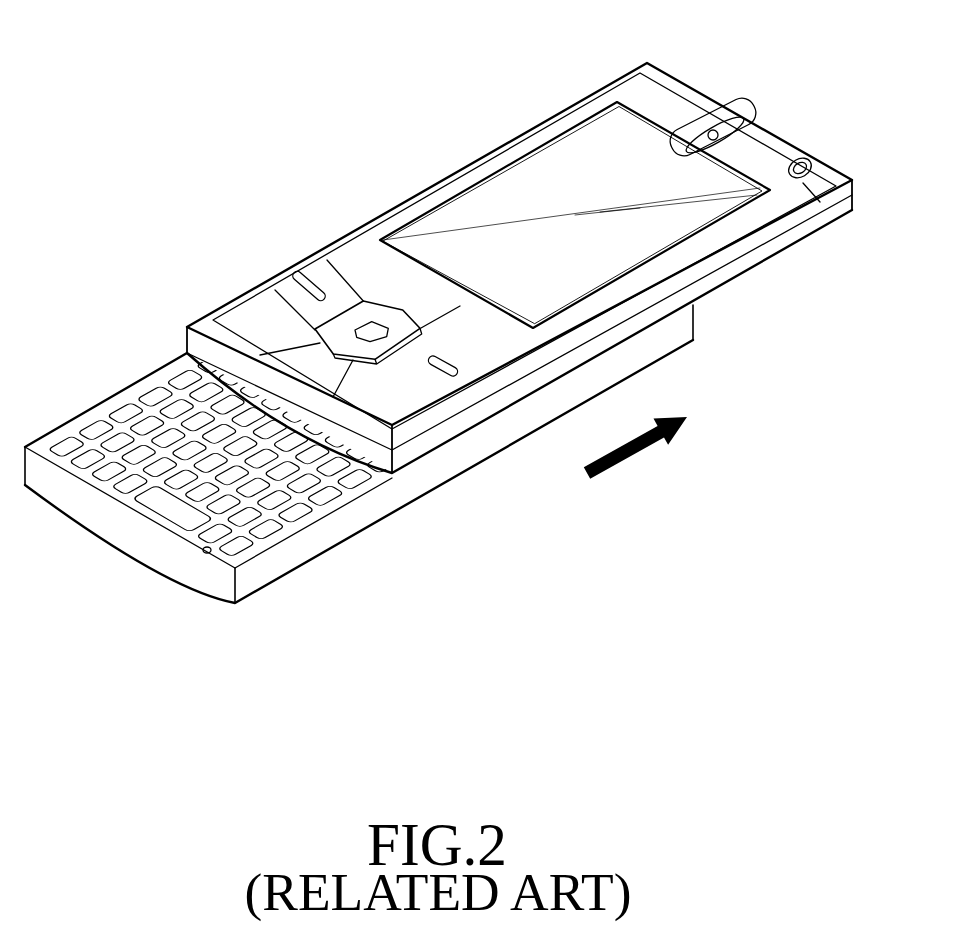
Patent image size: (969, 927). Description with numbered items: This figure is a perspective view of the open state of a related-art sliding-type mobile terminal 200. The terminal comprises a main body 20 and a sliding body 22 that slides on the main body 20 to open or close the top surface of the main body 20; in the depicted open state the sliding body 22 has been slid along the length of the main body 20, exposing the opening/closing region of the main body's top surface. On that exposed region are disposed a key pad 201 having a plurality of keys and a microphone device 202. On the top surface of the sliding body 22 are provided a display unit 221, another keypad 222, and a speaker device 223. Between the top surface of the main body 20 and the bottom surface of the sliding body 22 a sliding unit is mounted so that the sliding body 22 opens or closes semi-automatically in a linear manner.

The sliding-type mobile terminal 200 is at (239, 63).
The main body 20 is at (486, 497).
The sliding body 22 is at (429, 142).
The key pad 201 is at (294, 513).
The microphone device 202 is at (204, 553).
The display unit 221 is at (585, 147).
The keypad 222 is at (257, 313).
The speaker device 223 is at (718, 131).